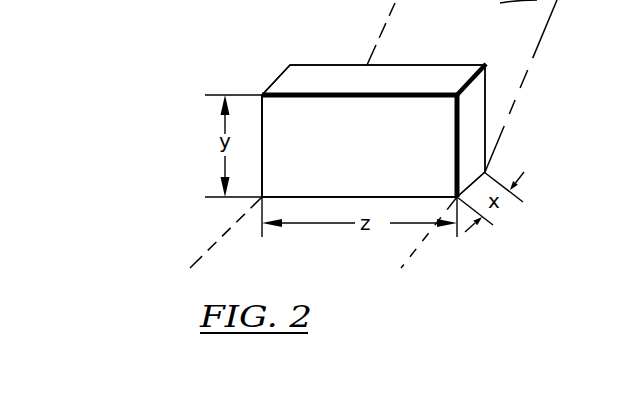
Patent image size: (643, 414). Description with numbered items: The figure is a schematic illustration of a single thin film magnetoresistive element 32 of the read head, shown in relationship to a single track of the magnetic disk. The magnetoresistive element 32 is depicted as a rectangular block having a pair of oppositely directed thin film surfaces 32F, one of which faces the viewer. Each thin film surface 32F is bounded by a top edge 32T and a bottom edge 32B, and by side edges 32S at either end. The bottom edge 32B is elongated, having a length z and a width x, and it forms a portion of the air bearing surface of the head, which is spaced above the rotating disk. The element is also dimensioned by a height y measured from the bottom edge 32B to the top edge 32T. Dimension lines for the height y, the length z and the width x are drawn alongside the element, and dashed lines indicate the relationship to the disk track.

The thin film magnetoresistive element 32 is at (255, 52).
The side edges 32S is at (260, 137).
The top edge 32T is at (337, 67).
The thin film surfaces 32F is at (418, 65).
The bottom edge 32B is at (355, 198).